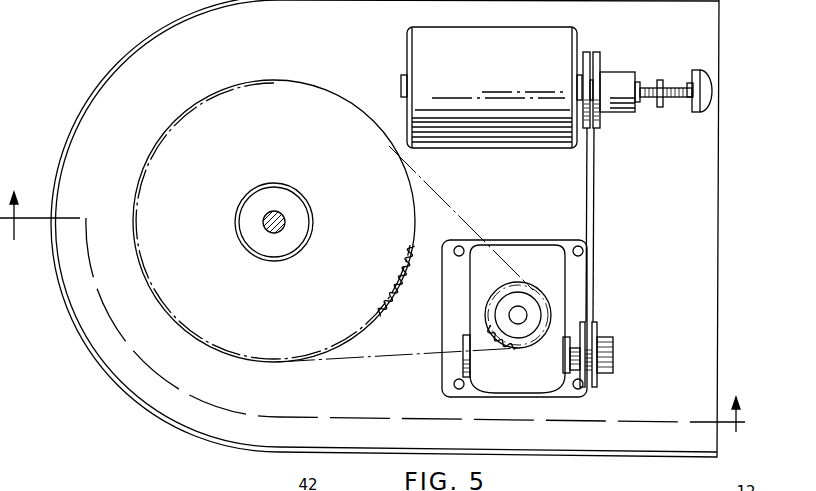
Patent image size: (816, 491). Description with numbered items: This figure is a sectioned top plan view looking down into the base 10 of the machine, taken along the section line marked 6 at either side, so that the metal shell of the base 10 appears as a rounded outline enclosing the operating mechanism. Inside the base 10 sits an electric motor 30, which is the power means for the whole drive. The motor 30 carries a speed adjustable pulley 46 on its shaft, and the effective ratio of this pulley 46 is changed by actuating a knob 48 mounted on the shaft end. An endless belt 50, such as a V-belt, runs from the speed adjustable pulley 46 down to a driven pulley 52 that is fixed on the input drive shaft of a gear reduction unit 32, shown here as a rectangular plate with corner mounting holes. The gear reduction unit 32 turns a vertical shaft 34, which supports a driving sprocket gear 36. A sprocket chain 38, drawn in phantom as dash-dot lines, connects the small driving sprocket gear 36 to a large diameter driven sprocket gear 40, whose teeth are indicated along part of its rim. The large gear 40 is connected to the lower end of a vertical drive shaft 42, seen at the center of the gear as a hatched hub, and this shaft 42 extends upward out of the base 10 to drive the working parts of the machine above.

The base 10 is at (718, 292).
The electric motor 30 is at (515, 133).
The gear reduction unit 32 is at (532, 255).
The vertical shaft 34 is at (521, 314).
The driving sprocket gear 36 is at (519, 350).
The sprocket chain 38 is at (365, 358).
The driven sprocket gear 40 is at (397, 287).
The vertical drive shaft 42 is at (275, 222).
The speed adjustable pulley 46 is at (600, 58).
The knob 48 is at (707, 93).
The endless belt 50 is at (595, 180).
The driven pulley 52 is at (599, 328).
The section line 6- 6 is at (376, 318).